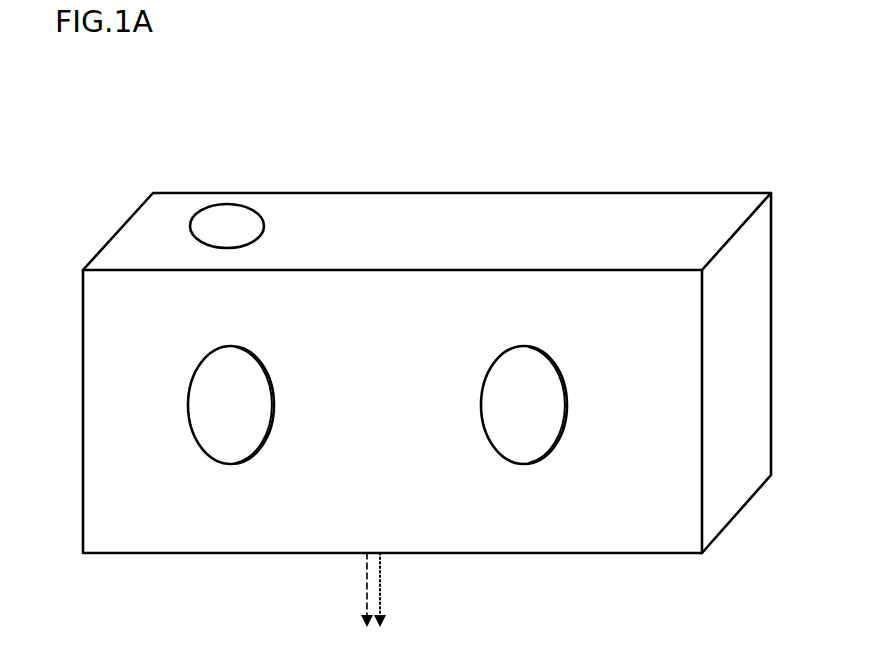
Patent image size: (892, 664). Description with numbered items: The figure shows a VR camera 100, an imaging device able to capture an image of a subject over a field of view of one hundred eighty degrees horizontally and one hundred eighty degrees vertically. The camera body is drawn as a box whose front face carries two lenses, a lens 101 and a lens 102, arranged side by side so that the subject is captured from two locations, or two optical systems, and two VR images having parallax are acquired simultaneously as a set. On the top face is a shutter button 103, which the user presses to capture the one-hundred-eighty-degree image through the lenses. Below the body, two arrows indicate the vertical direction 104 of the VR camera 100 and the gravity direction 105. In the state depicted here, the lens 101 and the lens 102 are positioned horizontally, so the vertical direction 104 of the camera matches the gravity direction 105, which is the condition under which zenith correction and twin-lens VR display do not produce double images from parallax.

The VR camera 100 is at (133, 121).
The lens 101 is at (232, 442).
The lens 102 is at (525, 440).
The shutter button 103 is at (230, 223).
The vertical direction 104 is at (367, 580).
The gravity direction 105 is at (382, 601).